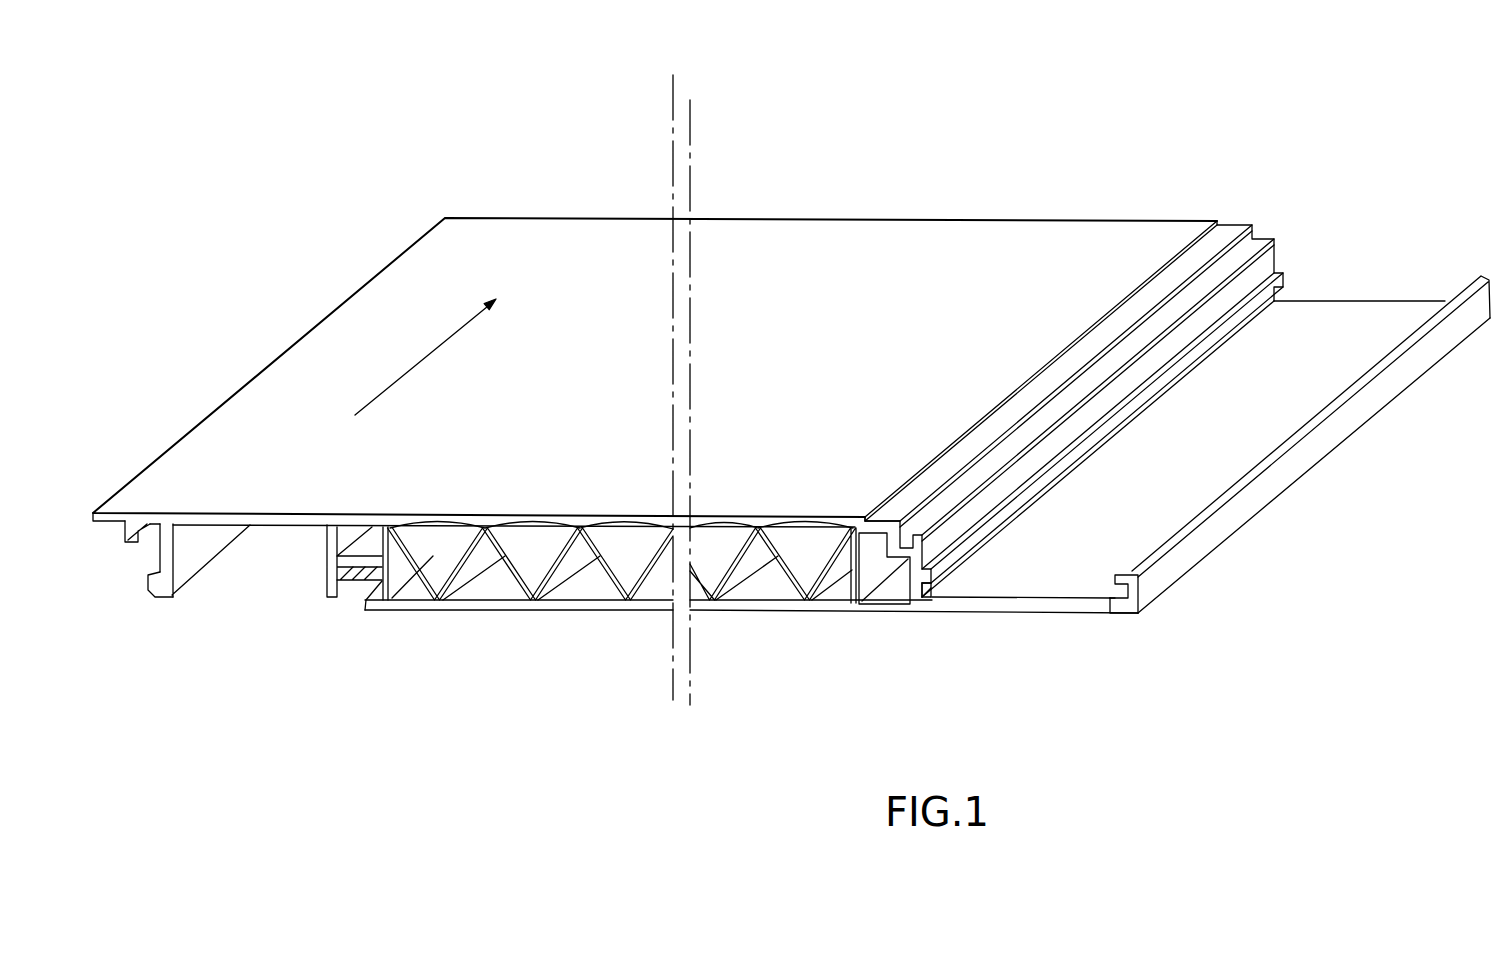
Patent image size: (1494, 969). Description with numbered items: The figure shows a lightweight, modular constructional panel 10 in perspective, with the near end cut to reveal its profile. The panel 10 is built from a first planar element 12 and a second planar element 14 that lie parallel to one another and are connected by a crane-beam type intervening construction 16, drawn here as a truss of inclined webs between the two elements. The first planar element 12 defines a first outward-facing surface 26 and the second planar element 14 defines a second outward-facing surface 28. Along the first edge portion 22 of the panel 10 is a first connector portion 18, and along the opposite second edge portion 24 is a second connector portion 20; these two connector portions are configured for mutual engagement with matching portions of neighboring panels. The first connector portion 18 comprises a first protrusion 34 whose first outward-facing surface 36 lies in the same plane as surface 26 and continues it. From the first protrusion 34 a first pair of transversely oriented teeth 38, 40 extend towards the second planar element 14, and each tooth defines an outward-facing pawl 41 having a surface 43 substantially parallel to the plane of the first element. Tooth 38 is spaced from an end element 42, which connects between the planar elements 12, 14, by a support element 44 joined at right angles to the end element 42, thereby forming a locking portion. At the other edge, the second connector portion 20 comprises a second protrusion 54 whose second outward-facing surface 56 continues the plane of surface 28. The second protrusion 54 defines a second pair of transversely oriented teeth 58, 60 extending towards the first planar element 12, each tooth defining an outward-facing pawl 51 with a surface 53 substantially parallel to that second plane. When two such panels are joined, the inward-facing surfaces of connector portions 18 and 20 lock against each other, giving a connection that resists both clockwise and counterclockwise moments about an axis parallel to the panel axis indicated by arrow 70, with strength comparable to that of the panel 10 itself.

The constructional panel 10 is at (789, 376).
The first planar element 12 is at (822, 508).
The second planar element 14 is at (820, 605).
The intervening construction 16 is at (583, 598).
The first connector portion 18 is at (196, 492).
The second connector portion 20 is at (1256, 362).
The first edge portion 22 is at (655, 366).
The second edge portion 24 is at (1367, 205).
The first outward-facing surface 26 is at (522, 503).
The second outward-facing surface 28 is at (489, 618).
The first protrusion 34 is at (270, 514).
The first outward-facing surface of first protrusion 36 is at (258, 508).
The tooth 38 is at (327, 568).
The tooth 40 is at (172, 556).
The pawl 41 is at (157, 594).
The end element 42 is at (398, 585).
The pawl surface 43 is at (137, 560).
The support element 44 is at (340, 556).
The pawl 51 is at (1113, 582).
The pawl surface 53 is at (928, 600).
The second protrusion 54 is at (978, 614).
The second outward-facing surface of second protrusion 56 is at (1052, 614).
The tooth 58 is at (1165, 590).
The tooth 60 is at (923, 560).
The arrow 70 is at (388, 387).